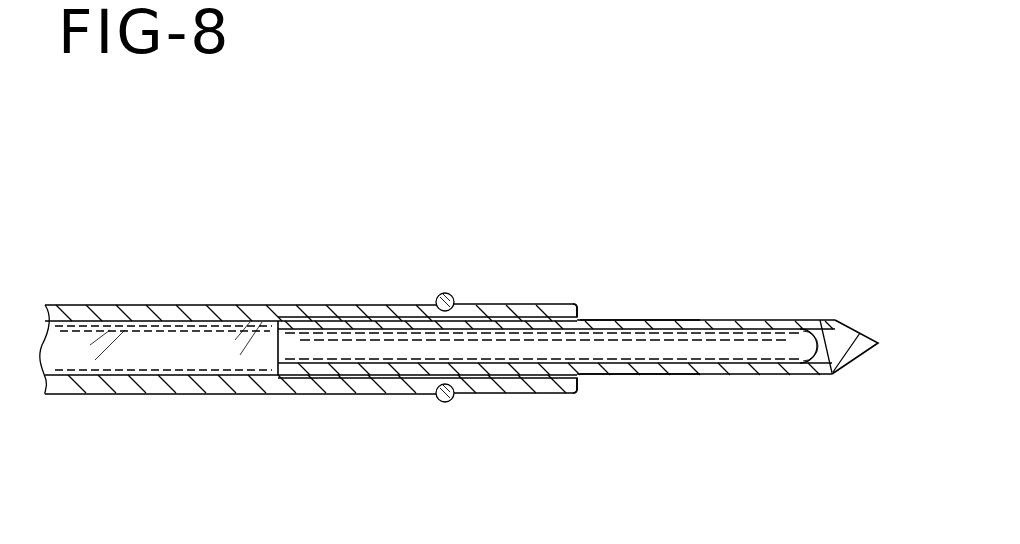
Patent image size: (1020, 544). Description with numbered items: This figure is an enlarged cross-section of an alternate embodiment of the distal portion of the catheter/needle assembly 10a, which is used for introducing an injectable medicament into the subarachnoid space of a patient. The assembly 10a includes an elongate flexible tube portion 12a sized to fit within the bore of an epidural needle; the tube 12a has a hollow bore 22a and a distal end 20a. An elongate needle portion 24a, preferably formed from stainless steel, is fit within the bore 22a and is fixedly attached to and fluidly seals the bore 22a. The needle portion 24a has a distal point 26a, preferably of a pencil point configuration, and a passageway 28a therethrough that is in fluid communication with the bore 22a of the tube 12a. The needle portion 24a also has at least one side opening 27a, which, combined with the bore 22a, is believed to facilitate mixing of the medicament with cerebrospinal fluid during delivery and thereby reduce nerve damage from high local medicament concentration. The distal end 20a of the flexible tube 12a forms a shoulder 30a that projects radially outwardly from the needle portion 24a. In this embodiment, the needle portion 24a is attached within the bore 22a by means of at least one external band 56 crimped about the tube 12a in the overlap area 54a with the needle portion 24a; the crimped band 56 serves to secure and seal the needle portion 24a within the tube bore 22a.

The catheter/needle assembly 10a is at (476, 199).
The elongate flexible tube portion 12a is at (164, 304).
The distal end 20a is at (557, 300).
The hollow bore 22a is at (197, 375).
The elongate needle portion 24a is at (668, 378).
The distal point 26a is at (879, 345).
The side opening 27a is at (768, 318).
The passageway 28a is at (365, 354).
The shoulder 30a is at (578, 389).
The overlap area 54a is at (578, 313).
The external band 56 is at (447, 403).